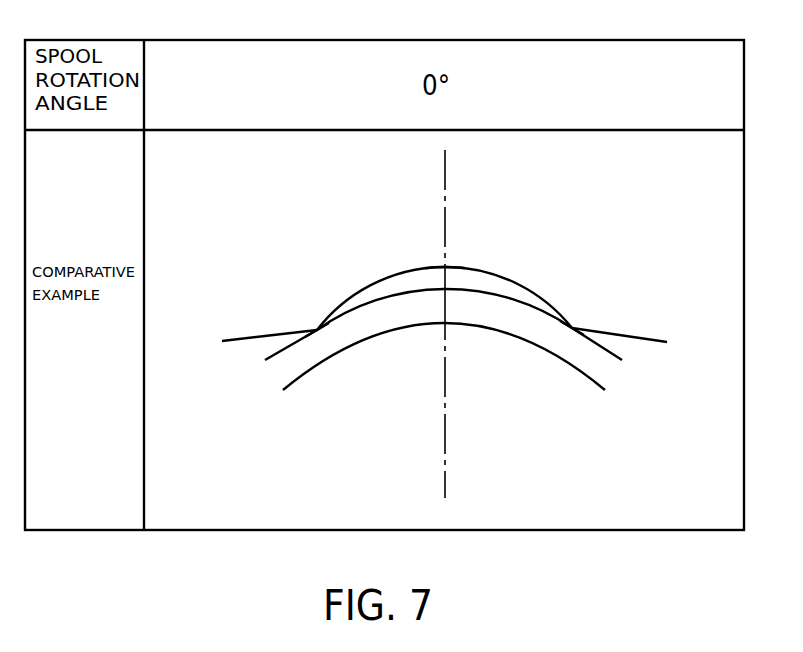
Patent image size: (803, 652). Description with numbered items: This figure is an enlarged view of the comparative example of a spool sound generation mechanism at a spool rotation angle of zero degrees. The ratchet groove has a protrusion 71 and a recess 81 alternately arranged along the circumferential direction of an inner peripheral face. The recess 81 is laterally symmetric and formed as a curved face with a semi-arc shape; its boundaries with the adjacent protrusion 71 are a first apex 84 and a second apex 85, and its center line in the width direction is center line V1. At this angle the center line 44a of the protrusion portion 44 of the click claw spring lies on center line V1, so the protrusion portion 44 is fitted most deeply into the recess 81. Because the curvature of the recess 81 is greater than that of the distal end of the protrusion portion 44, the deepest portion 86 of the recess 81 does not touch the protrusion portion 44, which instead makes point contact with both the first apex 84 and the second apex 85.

The center line V1 is at (443, 173).
The protrusion portion 44 is at (528, 325).
The center line 44a is at (443, 418).
The protrusion 71 is at (253, 342).
The recess 81 is at (382, 278).
The first apex 84 is at (317, 328).
The second apex 85 is at (572, 327).
The deepest portion 86 is at (446, 264).